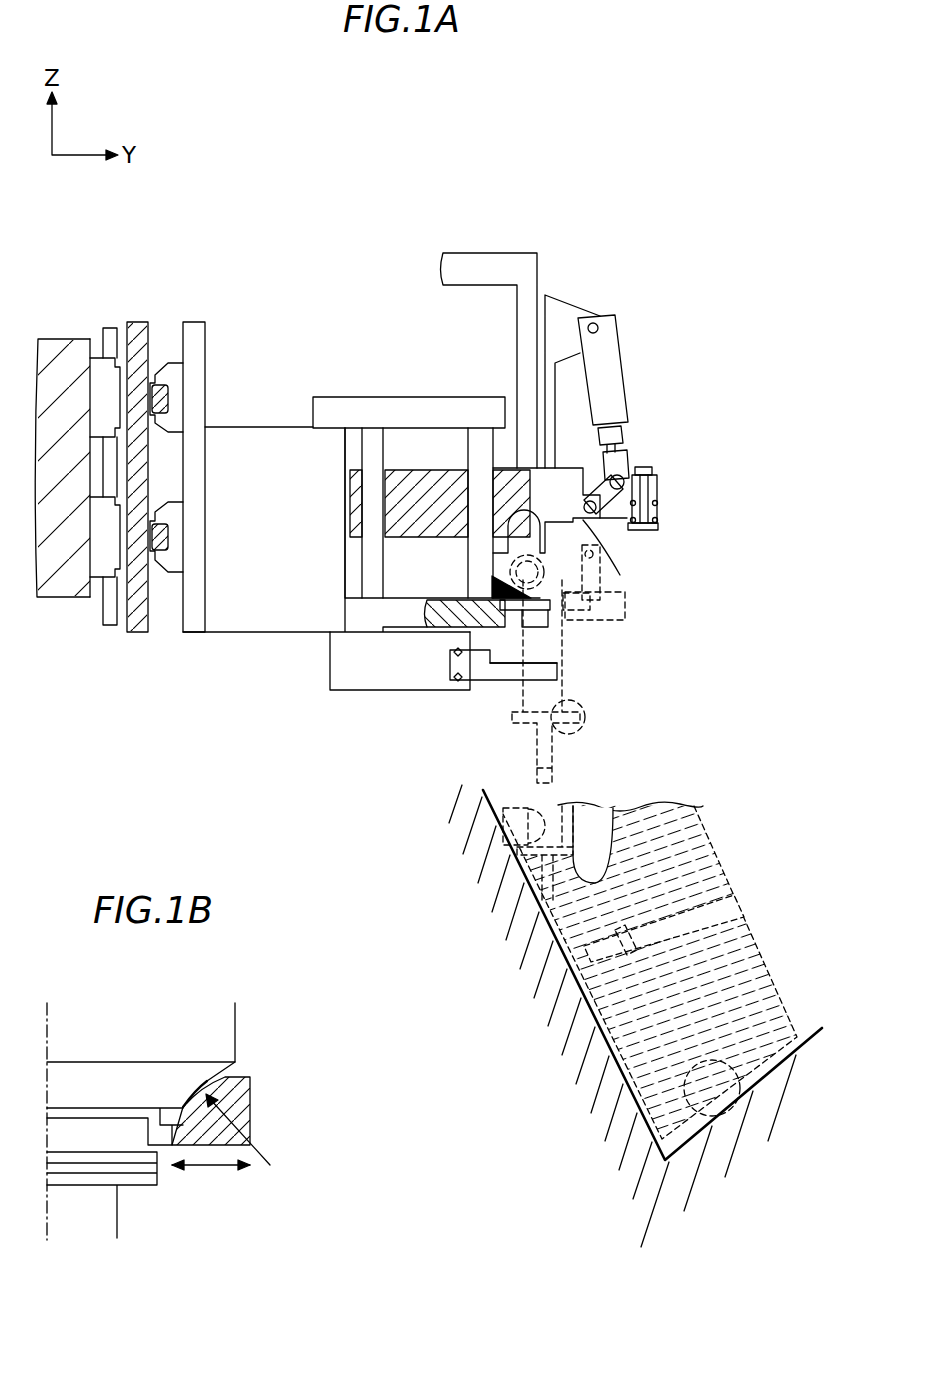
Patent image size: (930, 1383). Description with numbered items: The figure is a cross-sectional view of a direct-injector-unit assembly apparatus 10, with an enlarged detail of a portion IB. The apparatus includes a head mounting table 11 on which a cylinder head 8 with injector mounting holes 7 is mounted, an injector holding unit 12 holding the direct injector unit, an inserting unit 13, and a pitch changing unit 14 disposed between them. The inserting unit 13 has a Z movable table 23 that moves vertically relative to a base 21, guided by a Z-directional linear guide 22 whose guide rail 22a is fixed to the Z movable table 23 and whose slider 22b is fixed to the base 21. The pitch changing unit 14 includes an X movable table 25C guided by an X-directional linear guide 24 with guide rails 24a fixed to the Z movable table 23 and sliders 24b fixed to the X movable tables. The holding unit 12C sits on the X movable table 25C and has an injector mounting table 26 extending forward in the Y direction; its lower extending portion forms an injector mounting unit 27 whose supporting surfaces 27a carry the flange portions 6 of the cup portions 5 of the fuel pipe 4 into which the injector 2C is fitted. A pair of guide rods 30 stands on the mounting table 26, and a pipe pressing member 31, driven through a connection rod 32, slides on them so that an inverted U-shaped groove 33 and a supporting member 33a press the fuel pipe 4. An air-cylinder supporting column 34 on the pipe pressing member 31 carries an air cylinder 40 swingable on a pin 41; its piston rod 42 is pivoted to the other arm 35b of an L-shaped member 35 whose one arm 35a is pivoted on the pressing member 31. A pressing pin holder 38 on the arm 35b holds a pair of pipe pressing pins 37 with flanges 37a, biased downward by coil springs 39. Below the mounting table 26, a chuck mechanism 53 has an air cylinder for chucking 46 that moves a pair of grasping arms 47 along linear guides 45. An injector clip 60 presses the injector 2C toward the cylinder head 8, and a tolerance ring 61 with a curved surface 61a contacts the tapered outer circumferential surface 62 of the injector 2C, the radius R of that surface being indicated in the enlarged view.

In FIG. 1A, the direct-injector-unit assembly apparatus 10 is at (640, 166).
In FIG. 1A, the base 21 is at (60, 355).
In FIG. 1A, the Z-directional linear guide 22 is at (153, 247).
In FIG. 1A, the guide rail 22a is at (115, 336).
In FIG. 1A, the slider 22b is at (102, 397).
In FIG. 1A, the Z movable table 23 is at (138, 330).
In FIG. 1A, the X-directional linear guide 24 is at (275, 247).
In FIG. 1A, the guide rails 24a is at (155, 385).
In FIG. 1A, the sliders 24b is at (178, 398).
In FIG. 1A, the X movable table 25C is at (195, 607).
In FIG. 1A, the injector mounting table 26 is at (243, 603).
In FIG. 1A, the injector holding unit 12 is at (380, 305).
In FIG. 1A, the holding unit 12C is at (262, 420).
In FIG. 1A, the inserting unit 13 is at (92, 646).
In FIG. 1A, the pitch changing unit 14 is at (163, 646).
In FIG. 1A, the guide rods 30 is at (478, 455).
In FIG. 1A, the pipe pressing member 31 is at (413, 485).
In FIG. 1A, the connection rod 32 is at (520, 312).
In FIG. 1A, the air-cylinder supporting column 34 is at (565, 318).
In FIG. 1A, the air cylinder 40 is at (612, 365).
In FIG. 1A, the pin 41 is at (596, 322).
In FIG. 1A, the piston rod 42 is at (612, 438).
In FIG. 1A, the L-shaped member 35 is at (650, 472).
In FIG. 1A, the one arm 35a is at (590, 520).
In FIG. 1A, the other arm 35b is at (628, 477).
In FIG. 1A, the pipe pressing pins 37 is at (645, 498).
In FIG. 1A, the flanges 37a is at (643, 530).
In FIG. 1A, the pressing pin holder 38 is at (657, 490).
In FIG. 1A, the coil springs 39 is at (657, 512).
In FIG. 1A, the supporting surfaces 27a is at (548, 596).
In FIG. 1A, the injector mounting unit 27 is at (530, 620).
In FIG. 1A, the inverted U-shaped groove 33 is at (500, 548).
In FIG. 1A, the supporting member 33a is at (512, 612).
In FIG. 1A, the fuel pipe 4 is at (492, 577).
In FIG. 1A, the cup portion 5 is at (560, 637).
In FIG. 1A, the flange portion 6 is at (568, 620).
In FIG. 1A, the injector clip 60 is at (565, 660).
In FIG. 1A, the tolerance ring 61 is at (585, 722).
In FIG. 1B, the tolerance ring 61 is at (238, 1110).
In FIG. 1B, the curved surface 61a is at (205, 1082).
In FIG. 1B, the tapered outer circumferential surface 62 is at (232, 1079).
In FIG. 1A, the injector 2C is at (547, 748).
In FIG. 1B, the injector 2C is at (222, 1023).
In FIG. 1A, the portion IB is at (587, 712).
In FIG. 1A, the linear guides 45 is at (452, 655).
In FIG. 1A, the air cylinder for chucking 46 is at (368, 672).
In FIG. 1A, the grasping arms 47 is at (500, 673).
In FIG. 1A, the chuck mechanism 53 is at (327, 700).
In FIG. 1A, the injector mounting hole 7 is at (525, 853).
In FIG. 1A, the cylinder head 8 is at (765, 937).
In FIG. 1A, the head mounting table 11 is at (723, 1152).
In FIG. 1B, the radius R is at (247, 1128).